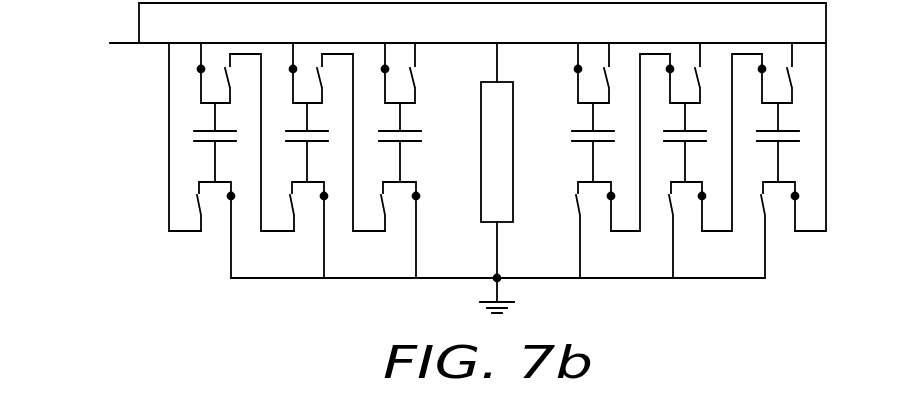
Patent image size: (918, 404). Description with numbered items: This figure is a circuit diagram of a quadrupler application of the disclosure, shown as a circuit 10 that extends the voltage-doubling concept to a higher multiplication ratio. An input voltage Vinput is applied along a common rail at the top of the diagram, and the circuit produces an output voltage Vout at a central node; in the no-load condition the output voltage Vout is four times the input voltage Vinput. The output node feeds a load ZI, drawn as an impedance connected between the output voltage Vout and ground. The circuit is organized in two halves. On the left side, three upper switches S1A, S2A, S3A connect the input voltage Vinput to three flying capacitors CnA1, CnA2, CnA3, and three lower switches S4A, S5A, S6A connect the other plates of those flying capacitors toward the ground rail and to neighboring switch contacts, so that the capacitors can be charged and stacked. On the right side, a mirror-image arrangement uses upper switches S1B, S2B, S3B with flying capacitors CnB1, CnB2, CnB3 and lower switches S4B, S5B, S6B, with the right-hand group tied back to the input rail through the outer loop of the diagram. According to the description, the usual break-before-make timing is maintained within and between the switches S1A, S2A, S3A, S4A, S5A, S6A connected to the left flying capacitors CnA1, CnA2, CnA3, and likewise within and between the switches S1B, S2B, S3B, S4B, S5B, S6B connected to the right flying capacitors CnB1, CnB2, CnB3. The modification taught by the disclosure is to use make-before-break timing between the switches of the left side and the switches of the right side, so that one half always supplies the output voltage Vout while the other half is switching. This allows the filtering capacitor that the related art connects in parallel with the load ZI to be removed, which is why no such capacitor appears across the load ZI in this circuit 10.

The switched-capacitor circuit 10 is at (155, 402).
The input voltage Vinput is at (436, 44).
The output voltage Vout is at (477, 51).
The load impedance ZI is at (510, 192).
The switch S1A is at (207, 60).
The switch S2A is at (300, 60).
The switch S3A is at (393, 60).
The switch S4A is at (206, 230).
The switch S5A is at (299, 230).
The switch S6A is at (391, 230).
The switch S1B is at (598, 60).
The switch S2B is at (689, 60).
The switch S3B is at (784, 60).
The switch S4B is at (608, 230).
The switch S5B is at (700, 230).
The switch S6B is at (794, 230).
The capacitor CnA1 is at (227, 142).
The capacitor CnA2 is at (319, 142).
The capacitor CnA3 is at (412, 142).
The capacitor CnB1 is at (581, 142).
The capacitor CnB2 is at (674, 142).
The capacitor CnB3 is at (766, 142).